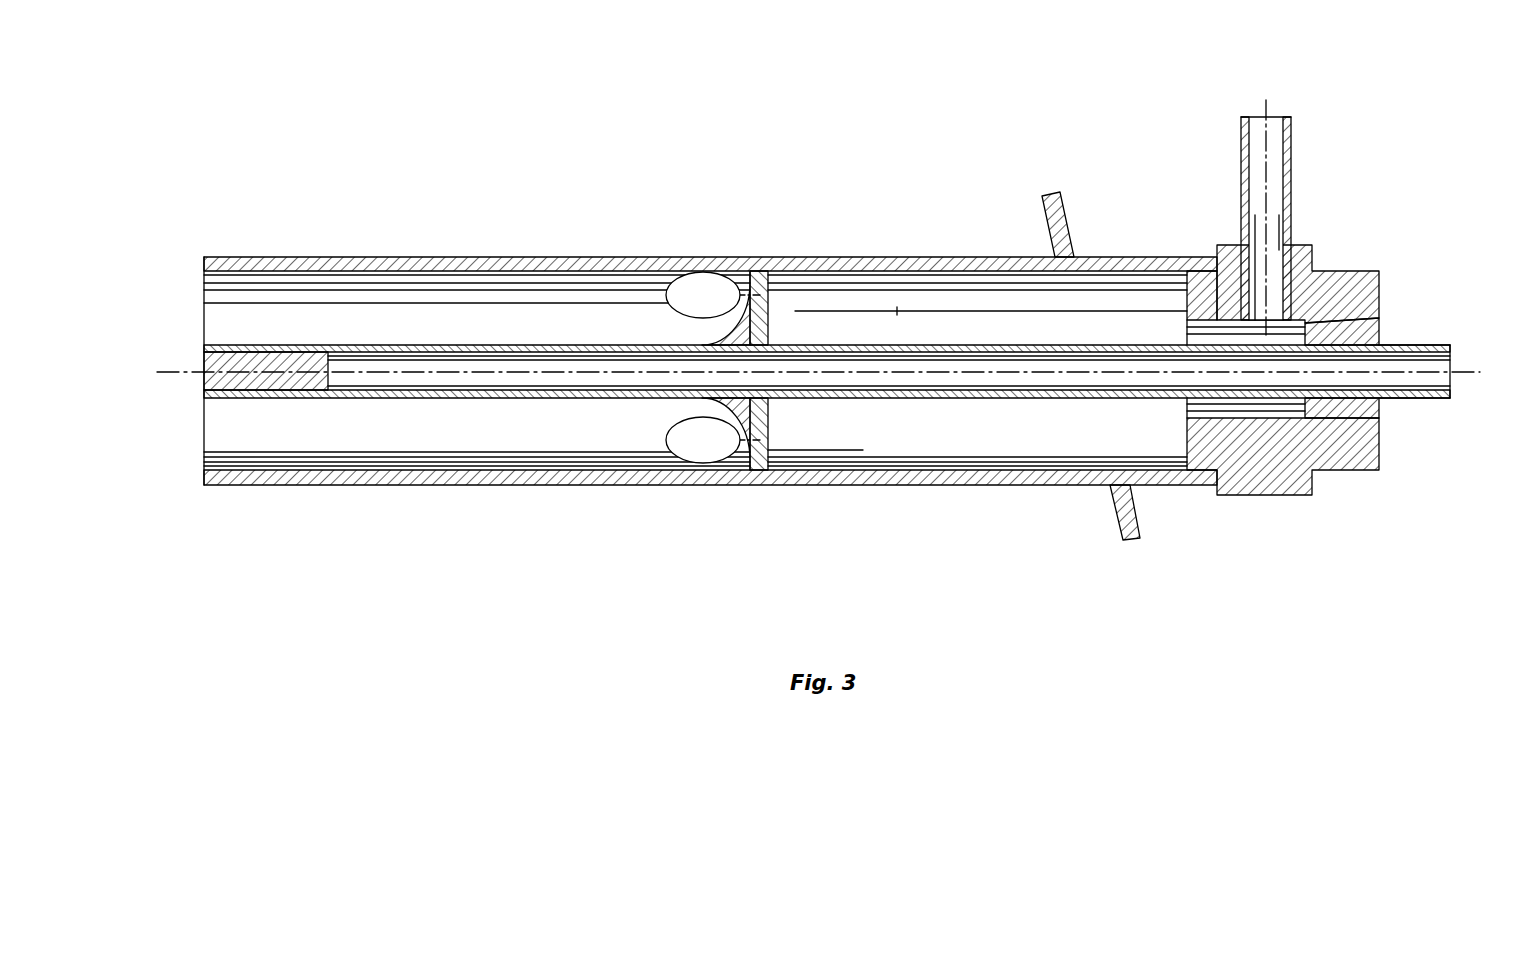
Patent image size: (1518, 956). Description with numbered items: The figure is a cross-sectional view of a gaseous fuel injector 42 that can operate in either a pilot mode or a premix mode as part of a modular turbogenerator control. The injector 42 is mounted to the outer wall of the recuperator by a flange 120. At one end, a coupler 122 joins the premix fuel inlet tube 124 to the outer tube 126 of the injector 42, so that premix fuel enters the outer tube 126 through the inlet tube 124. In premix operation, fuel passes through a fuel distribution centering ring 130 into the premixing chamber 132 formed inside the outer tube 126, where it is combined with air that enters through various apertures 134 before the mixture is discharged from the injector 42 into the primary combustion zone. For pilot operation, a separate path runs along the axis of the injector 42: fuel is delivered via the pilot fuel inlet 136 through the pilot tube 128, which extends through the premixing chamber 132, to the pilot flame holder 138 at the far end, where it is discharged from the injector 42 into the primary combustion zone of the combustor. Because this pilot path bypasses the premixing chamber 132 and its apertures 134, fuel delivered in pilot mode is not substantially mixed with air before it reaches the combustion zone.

The injector 42 is at (1338, 238).
The flange 120 is at (1065, 220).
The coupler 122 is at (1333, 472).
The premix fuel inlet tube 124 is at (1292, 155).
The outer tube 126 is at (810, 257).
The pilot tube 128 is at (902, 400).
The fuel distribution centering ring 130 is at (770, 422).
The premixing chamber 132 is at (428, 432).
The apertures 134 is at (705, 275).
The pilot fuel inlet 136 is at (1405, 340).
The pilot flame holder 138 is at (203, 382).